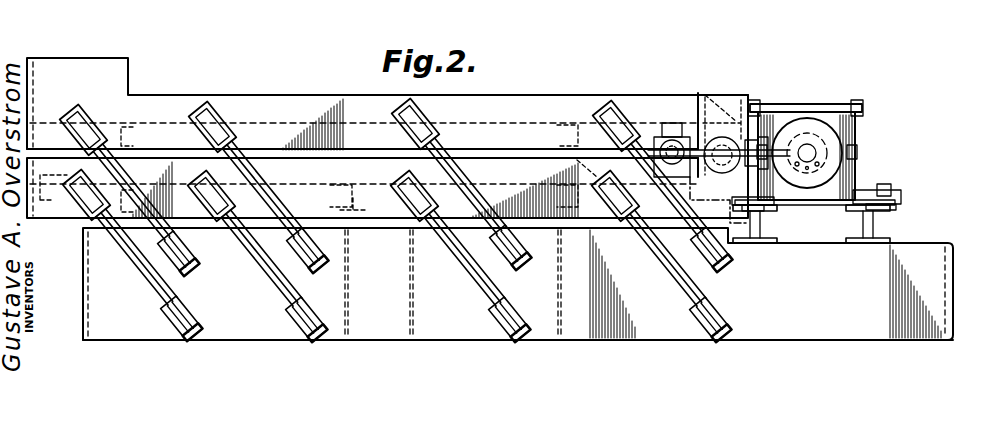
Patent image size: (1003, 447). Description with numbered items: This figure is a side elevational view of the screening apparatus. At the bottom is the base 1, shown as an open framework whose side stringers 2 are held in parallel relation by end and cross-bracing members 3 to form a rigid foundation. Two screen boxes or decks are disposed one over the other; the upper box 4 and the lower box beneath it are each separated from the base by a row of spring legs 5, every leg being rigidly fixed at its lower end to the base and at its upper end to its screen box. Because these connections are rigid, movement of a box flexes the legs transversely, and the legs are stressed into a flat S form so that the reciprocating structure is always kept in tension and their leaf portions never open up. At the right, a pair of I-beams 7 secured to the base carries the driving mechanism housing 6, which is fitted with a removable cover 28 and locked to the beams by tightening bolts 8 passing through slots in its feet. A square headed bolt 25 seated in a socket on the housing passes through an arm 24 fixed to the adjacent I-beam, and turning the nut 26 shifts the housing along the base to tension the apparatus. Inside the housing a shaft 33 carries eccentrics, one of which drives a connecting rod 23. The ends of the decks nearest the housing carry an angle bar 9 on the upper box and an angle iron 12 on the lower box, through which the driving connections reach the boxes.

The base 1 is at (829, 293).
The side stringers 2 is at (441, 330).
The end and cross-bracing members 3 is at (402, 322).
The screen box 4 is at (359, 97).
The spring legs 5 is at (118, 124).
The driving mechanism housing 6 is at (858, 131).
The I-beams 7 is at (760, 222).
The tightening bolts 8 is at (747, 194).
The angle bar 9 is at (708, 110).
The angle iron 12 is at (692, 212).
The connecting rod 23 is at (740, 167).
The arm 24 is at (890, 186).
The square headed bolt 25 is at (880, 190).
The nut 26 is at (898, 192).
The removable cover 28 is at (820, 108).
The shaft 33 is at (810, 162).